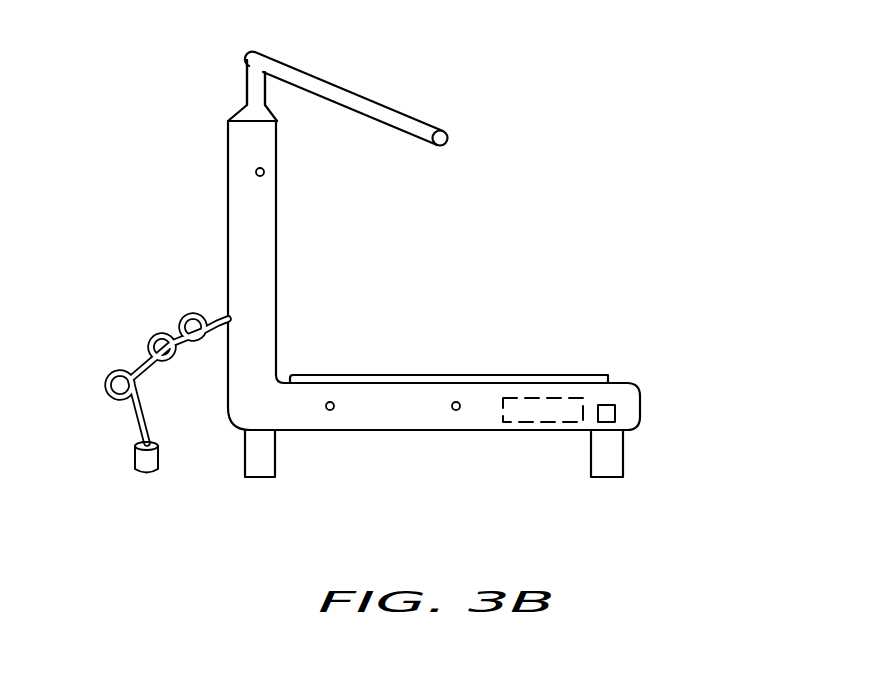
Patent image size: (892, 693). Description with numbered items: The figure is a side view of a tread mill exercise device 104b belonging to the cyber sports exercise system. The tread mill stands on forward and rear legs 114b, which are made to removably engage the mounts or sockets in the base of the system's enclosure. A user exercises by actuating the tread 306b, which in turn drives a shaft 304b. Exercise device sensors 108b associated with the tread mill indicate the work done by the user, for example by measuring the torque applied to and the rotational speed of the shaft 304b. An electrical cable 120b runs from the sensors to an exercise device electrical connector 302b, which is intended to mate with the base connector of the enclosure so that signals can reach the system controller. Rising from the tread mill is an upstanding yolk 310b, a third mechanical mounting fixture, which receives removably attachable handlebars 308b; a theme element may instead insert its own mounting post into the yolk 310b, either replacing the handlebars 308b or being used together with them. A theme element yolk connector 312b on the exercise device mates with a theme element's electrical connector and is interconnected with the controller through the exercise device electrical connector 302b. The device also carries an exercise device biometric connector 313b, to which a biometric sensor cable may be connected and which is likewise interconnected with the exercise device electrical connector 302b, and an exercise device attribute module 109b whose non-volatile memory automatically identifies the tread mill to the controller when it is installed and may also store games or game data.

The tread mill exercise device 104b is at (512, 195).
The handlebars 308b is at (380, 100).
The yolk 310b is at (248, 92).
The theme element yolk connector 312b is at (257, 176).
The electrical cable 120b is at (150, 330).
The exercise device electrical connector 302b is at (132, 458).
The shaft 304b is at (327, 401).
The tread 306b is at (412, 373).
The exercise device sensors 108b is at (546, 397).
The exercise device attribute module 109b is at (614, 407).
The exercise device biometric connector 313b is at (452, 408).
The legs 114b is at (247, 455).